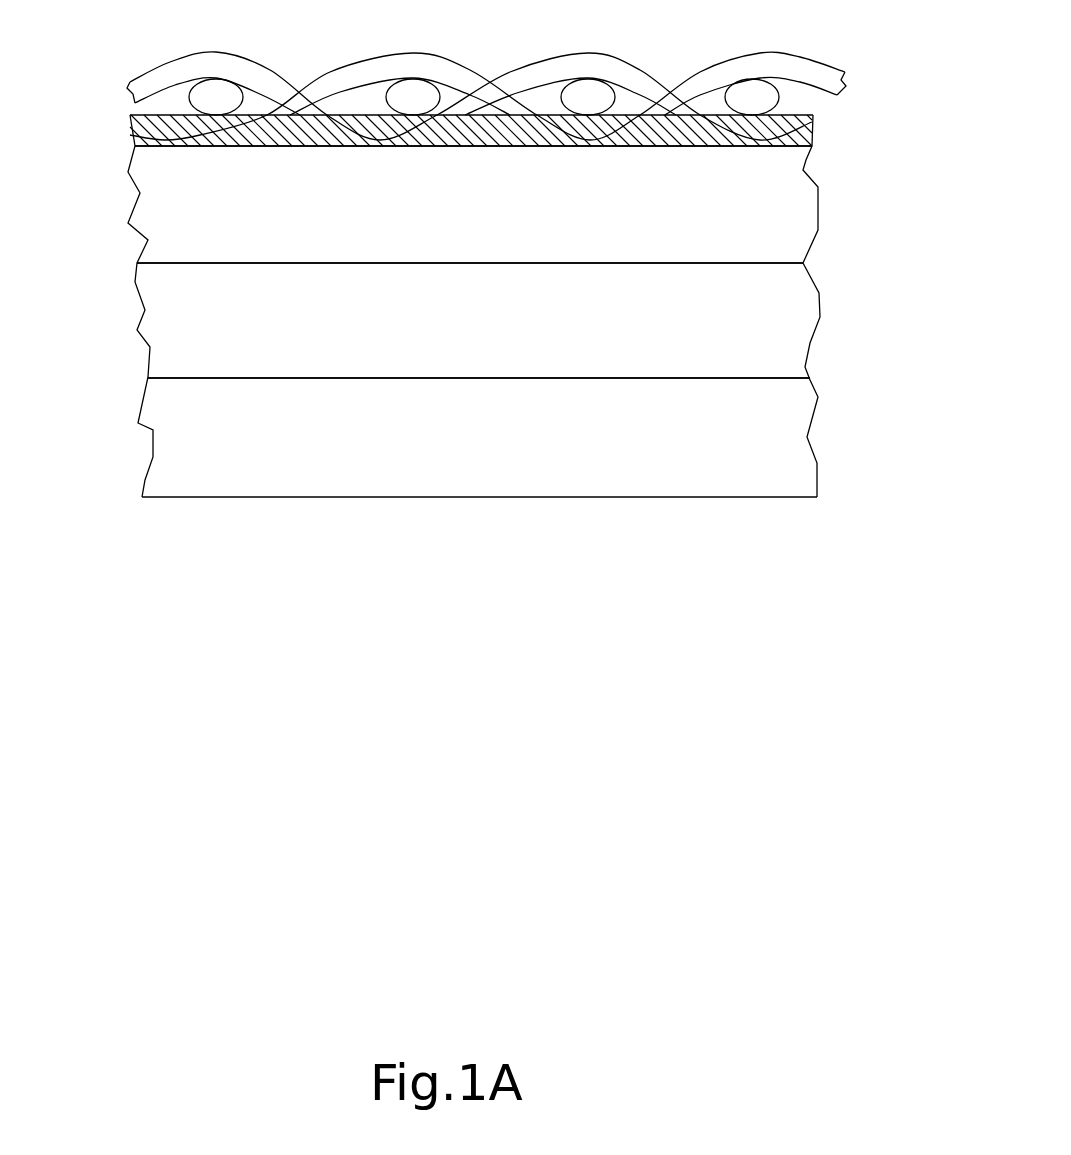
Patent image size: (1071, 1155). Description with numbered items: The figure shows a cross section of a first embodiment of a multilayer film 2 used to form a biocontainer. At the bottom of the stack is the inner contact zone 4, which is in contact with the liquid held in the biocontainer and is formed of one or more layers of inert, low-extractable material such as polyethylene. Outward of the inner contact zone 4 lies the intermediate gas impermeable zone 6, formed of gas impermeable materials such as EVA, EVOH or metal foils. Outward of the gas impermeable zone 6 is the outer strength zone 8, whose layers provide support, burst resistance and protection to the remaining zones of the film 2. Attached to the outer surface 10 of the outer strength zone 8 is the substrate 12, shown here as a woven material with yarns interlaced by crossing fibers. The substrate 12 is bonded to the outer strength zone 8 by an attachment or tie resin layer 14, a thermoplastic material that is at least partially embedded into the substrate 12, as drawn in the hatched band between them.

The film 2 is at (128, 62).
The inner contact zone 4 is at (790, 443).
The gas impermeable zone 6 is at (790, 325).
The outer strength zone 8 is at (798, 212).
The outer surface 10 is at (810, 147).
The substrate 12 is at (817, 100).
The tie resin layer 14 is at (132, 133).